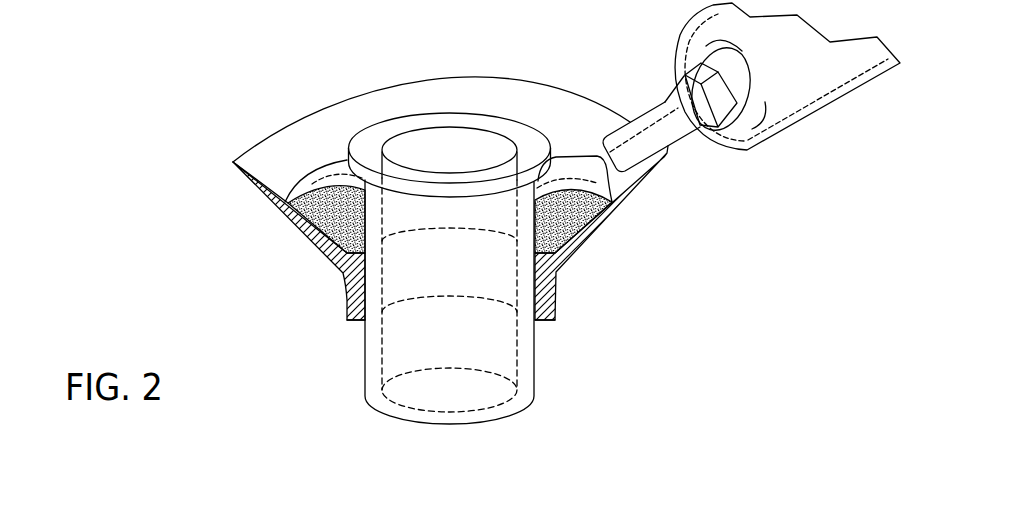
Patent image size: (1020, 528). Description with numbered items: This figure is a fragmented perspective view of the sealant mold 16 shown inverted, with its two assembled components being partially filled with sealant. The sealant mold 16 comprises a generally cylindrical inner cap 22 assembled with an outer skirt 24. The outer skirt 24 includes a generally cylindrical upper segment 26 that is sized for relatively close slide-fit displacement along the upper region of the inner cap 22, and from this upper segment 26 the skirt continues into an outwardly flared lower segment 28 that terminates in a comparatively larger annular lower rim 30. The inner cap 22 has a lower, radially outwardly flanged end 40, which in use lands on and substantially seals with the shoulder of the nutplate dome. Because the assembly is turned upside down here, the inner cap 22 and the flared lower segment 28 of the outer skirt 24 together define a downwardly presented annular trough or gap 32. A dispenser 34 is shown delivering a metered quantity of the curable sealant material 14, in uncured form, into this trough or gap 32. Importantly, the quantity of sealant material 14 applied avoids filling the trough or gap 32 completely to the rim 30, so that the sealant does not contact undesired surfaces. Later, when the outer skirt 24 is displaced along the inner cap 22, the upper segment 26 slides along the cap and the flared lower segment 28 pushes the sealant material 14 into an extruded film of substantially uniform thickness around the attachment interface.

The curable sealant material 14 is at (565, 193).
The sealant mold 16 is at (320, 373).
The inner cap 22 is at (518, 368).
The outer skirt 24 is at (292, 263).
The upper segment 26 is at (345, 302).
The flared lower segment 28 is at (287, 207).
The lower rim 30 is at (505, 80).
The annular trough or gap 32 is at (268, 139).
The dispenser 34 is at (810, 50).
The flanged end 40 is at (385, 130).